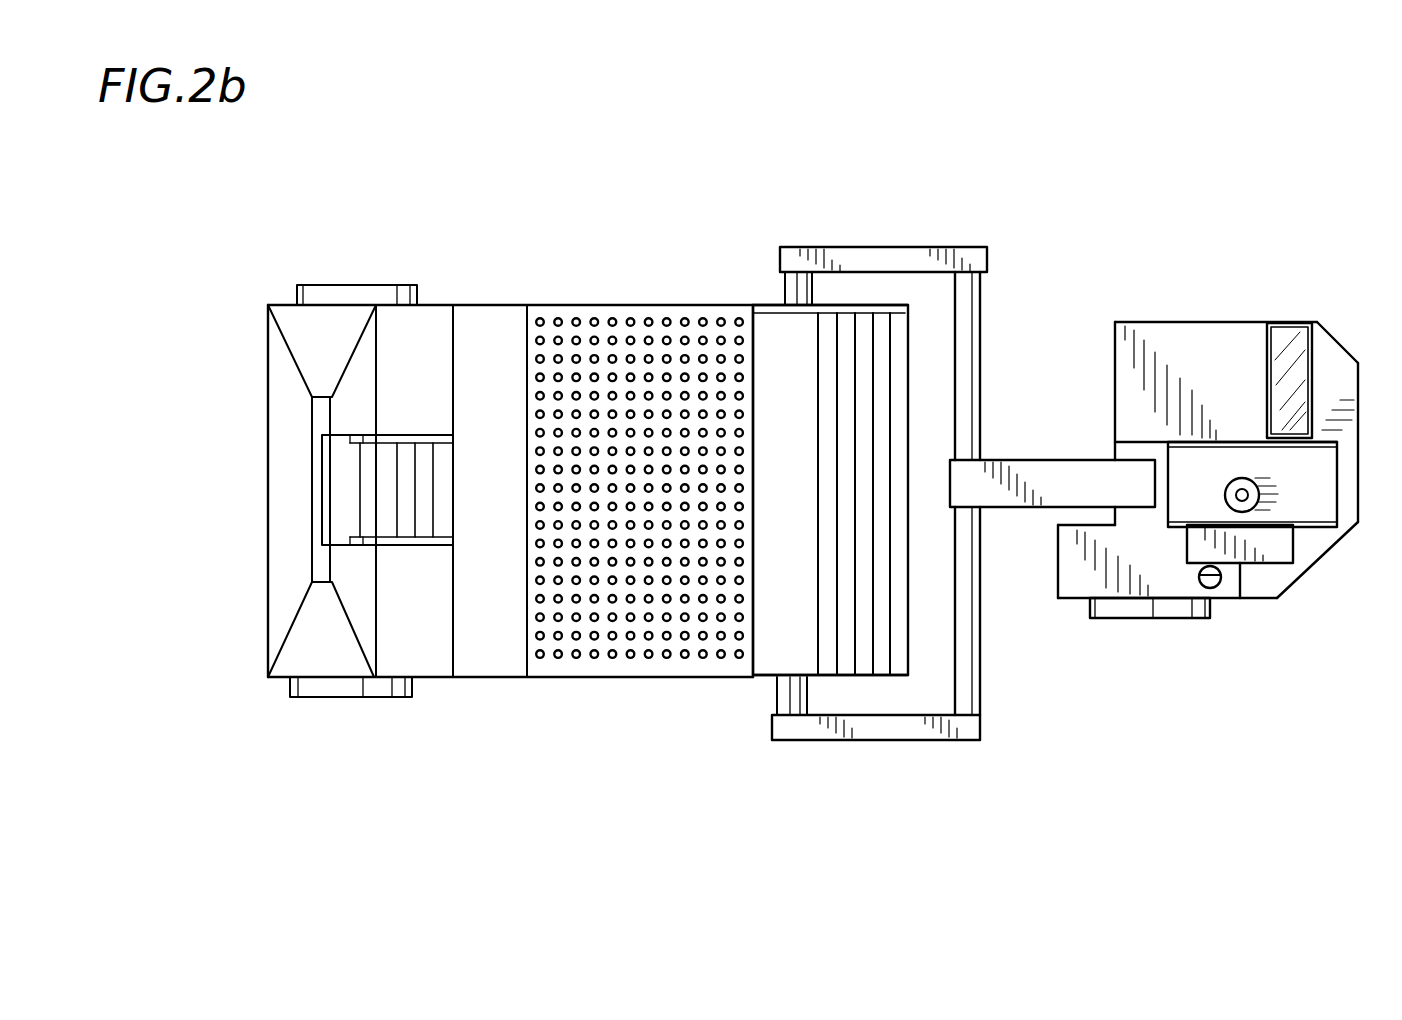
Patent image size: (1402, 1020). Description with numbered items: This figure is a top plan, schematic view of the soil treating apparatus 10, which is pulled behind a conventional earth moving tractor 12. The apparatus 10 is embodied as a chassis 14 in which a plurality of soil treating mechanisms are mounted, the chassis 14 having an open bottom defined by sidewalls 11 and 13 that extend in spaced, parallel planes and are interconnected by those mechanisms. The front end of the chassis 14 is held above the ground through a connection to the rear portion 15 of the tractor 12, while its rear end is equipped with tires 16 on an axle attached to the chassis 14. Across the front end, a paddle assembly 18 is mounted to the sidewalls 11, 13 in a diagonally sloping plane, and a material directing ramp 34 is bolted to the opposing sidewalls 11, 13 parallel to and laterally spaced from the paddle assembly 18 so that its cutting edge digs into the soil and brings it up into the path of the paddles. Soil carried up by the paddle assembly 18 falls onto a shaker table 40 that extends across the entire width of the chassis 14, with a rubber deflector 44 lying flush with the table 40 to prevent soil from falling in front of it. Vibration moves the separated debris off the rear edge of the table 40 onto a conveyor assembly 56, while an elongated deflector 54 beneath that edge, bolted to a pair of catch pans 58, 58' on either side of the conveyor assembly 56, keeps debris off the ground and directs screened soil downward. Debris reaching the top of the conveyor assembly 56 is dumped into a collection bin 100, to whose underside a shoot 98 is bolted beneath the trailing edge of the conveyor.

The soil treating apparatus 10 is at (782, 167).
The sidewall 11 is at (483, 305).
The tractor 12 is at (1335, 378).
The sidewall 13 is at (478, 678).
The chassis 14 is at (900, 787).
The rear portion of tractor 15 is at (985, 305).
The tires 16 is at (363, 295).
The paddle assembly 18 is at (908, 573).
The material directing ramp 34 is at (765, 660).
The shaker table 40 is at (605, 375).
The rubber deflector 44 is at (762, 676).
The deflector 54 is at (500, 357).
The conveyor assembly 56 is at (382, 490).
The catch pan 58 is at (439, 550).
The catch pan 58' is at (420, 441).
The shoot 98 is at (330, 500).
The collection bin 100 is at (292, 432).